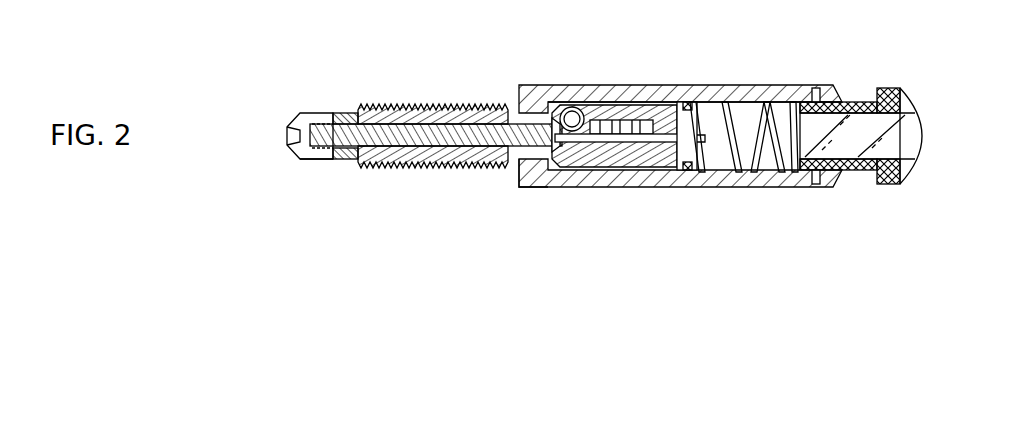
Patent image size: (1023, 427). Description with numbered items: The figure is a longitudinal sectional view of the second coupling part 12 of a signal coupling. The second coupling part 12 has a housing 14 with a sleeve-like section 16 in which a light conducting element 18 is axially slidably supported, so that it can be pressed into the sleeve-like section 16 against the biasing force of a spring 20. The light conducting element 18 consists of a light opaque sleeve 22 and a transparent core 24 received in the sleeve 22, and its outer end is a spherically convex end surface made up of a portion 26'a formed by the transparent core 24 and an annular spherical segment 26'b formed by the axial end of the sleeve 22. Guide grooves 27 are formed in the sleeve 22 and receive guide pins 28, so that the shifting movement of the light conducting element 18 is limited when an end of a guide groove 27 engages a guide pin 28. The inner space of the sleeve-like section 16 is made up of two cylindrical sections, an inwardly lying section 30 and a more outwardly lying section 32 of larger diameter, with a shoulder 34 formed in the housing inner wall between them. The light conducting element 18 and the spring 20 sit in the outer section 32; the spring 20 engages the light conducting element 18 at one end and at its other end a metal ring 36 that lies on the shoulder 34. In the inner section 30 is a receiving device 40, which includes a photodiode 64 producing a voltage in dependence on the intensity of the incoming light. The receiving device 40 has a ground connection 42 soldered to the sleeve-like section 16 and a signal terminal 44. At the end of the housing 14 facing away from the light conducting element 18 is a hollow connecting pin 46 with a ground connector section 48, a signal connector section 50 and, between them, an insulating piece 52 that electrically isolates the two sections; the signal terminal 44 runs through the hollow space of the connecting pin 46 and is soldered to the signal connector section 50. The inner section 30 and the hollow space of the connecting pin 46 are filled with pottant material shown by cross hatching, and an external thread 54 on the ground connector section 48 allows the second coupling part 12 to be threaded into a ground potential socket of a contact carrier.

The second coupling part 12 is at (577, 302).
The housing 14 is at (549, 75).
The sleeve-like section 16 is at (628, 188).
The light conducting element 18 is at (858, 68).
The spring 20 is at (748, 100).
The light opaque sleeve 22 is at (893, 184).
The transparent core 24 is at (866, 172).
The portion of spherically convex end surface formed by transparent core 26'a is at (931, 161).
The portion of spherically convex end surface formed by sleeve 26'b is at (926, 94).
The guide groove 27 is at (863, 100).
The guide pin 28 is at (817, 86).
The inwardly lying section 30 is at (588, 175).
The outwardly lying section 32 is at (762, 186).
The shoulder 34 is at (690, 185).
The metal ring 36 is at (709, 100).
The receiving device 40 is at (626, 95).
The ground connection 42 is at (523, 188).
The signal terminal 44 is at (300, 160).
The hollow connecting pin 46 is at (402, 98).
The ground connector section 48 is at (466, 104).
The signal connector section 50 is at (292, 125).
The insulating piece 52 is at (350, 113).
The external thread 54 is at (443, 168).
The photodiode 64 is at (724, 178).